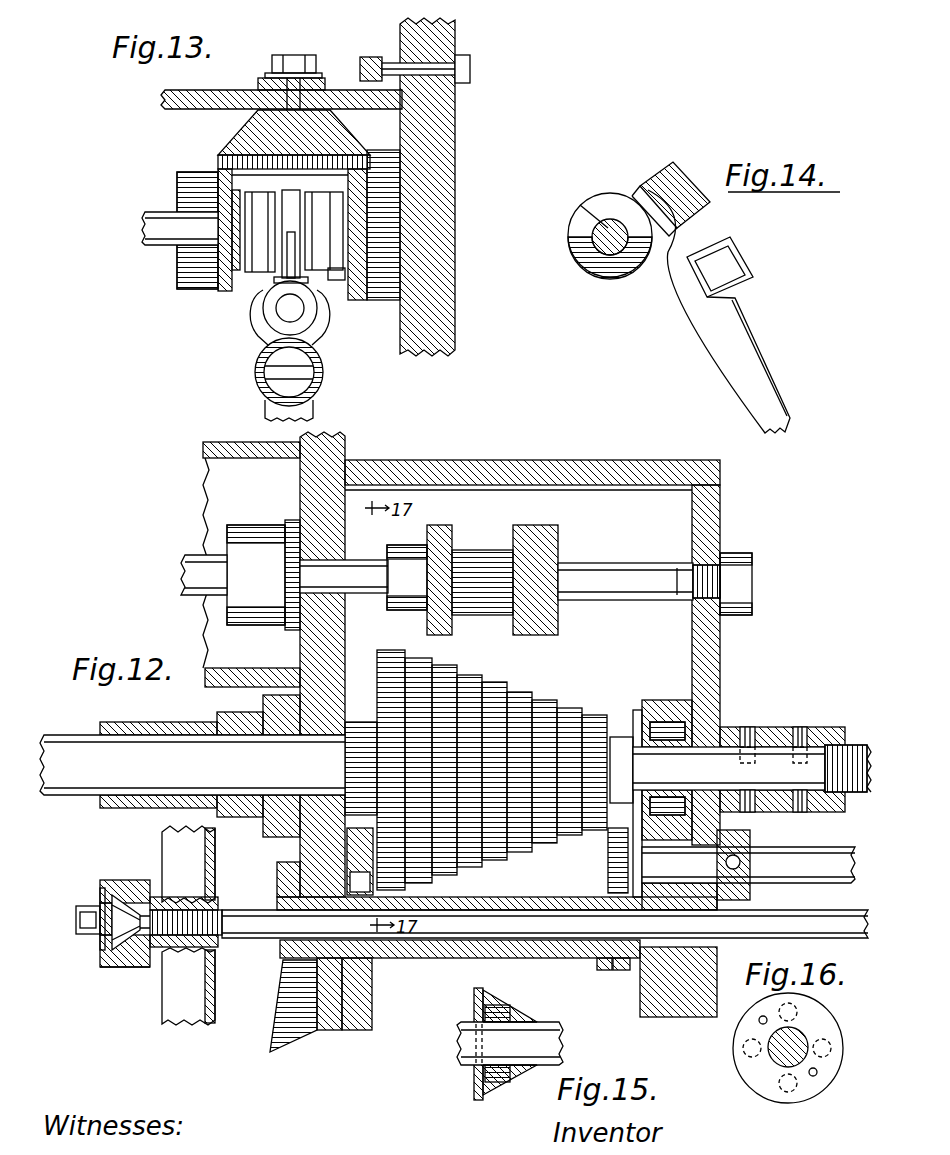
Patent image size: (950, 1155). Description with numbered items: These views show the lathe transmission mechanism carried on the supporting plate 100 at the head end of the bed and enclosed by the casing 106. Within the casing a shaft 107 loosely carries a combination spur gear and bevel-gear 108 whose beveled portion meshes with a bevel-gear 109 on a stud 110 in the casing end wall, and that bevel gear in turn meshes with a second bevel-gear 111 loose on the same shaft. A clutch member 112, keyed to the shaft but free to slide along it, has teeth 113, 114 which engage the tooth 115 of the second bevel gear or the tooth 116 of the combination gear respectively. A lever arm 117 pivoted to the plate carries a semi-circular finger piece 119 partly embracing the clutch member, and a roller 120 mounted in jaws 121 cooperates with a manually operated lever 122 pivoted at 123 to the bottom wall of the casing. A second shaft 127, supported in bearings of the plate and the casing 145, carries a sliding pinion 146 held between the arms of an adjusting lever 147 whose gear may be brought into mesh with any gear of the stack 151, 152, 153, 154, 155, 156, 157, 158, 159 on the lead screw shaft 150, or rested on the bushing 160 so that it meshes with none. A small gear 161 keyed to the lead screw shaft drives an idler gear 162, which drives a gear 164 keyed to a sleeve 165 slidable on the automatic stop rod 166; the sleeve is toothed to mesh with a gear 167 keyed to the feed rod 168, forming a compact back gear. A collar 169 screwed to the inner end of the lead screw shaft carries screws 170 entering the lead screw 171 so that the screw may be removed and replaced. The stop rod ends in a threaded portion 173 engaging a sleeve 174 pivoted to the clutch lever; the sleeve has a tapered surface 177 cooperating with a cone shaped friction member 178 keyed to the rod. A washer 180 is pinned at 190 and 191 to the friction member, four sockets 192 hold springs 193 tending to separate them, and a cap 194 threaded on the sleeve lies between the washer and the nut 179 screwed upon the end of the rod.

In FIG. 13, the supporting plate 100 is at (440, 150).
In FIG. 13, the casing 106 is at (225, 100).
In FIG. 12, the casing 106 is at (230, 446).
In FIG. 13, the shaft 107 is at (160, 247).
In FIG. 14, the shaft 107 is at (608, 257).
In FIG. 13, the combination spur gear and bevel-gear 108 is at (383, 302).
In FIG. 13, the bevel-gear 109 is at (340, 138).
In FIG. 13, the stud 110 is at (303, 76).
In FIG. 13, the second bevel-gear 111 is at (197, 290).
In FIG. 13, the clutch member 112 is at (291, 200).
In FIG. 14, the clutch member 112 is at (628, 277).
In FIG. 13, the tooth 113 is at (258, 203).
In FIG. 14, the tooth 113 is at (580, 253).
In FIG. 13, the tooth 114 is at (330, 200).
In FIG. 13, the tooth 115 is at (243, 273).
In FIG. 13, the tooth 116 is at (340, 277).
In FIG. 13, the lever arm 117 is at (285, 315).
In FIG. 14, the lever arm 117 is at (733, 365).
In FIG. 12, the lever arm 117 is at (197, 853).
In FIG. 13, the semi-circular finger piece 119 is at (213, 215).
In FIG. 14, the semi-circular finger piece 119 is at (620, 200).
In FIG. 14, the roller 120 is at (728, 255).
In FIG. 14, the jaws 121 is at (680, 250).
In FIG. 13, the manually operated lever 122 is at (307, 408).
In FIG. 13, the pivot 123 is at (297, 382).
In FIG. 12, the second shaft 127 is at (639, 568).
In FIG. 12, the casing 145 is at (712, 546).
In FIG. 12, the pinion 146 is at (488, 545).
In FIG. 12, the adjusting lever 147 is at (548, 537).
In FIG. 12, the lead screw shaft 150 is at (192, 765).
In FIG. 12, the gear 151 is at (386, 657).
In FIG. 12, the gear 152 is at (413, 665).
In FIG. 12, the gear 153 is at (447, 675).
In FIG. 12, the gear 154 is at (470, 678).
In FIG. 12, the gear 155 is at (494, 692).
In FIG. 12, the gear 156 is at (528, 690).
In FIG. 12, the gear 157 is at (543, 698).
In FIG. 12, the gear 158 is at (568, 708).
In FIG. 12, the gear 159 is at (607, 711).
In FIG. 12, the bushing 160 is at (623, 767).
In FIG. 12, the small gear 161 is at (362, 718).
In FIG. 12, the idler gear 162 is at (305, 842).
In FIG. 12, the gear 164 is at (365, 993).
In FIG. 12, the sleeve 165 is at (458, 957).
In FIG. 12, the automatic stop rod 166 is at (603, 983).
In FIG. 15, the automatic stop rod 166 is at (553, 1057).
In FIG. 16, the automatic stop rod 166 is at (798, 1035).
In FIG. 12, the gear 167 is at (612, 870).
In FIG. 12, the feed rod 168 is at (803, 877).
In FIG. 12, the collar 169 is at (762, 735).
In FIG. 12, the screws 170 is at (800, 733).
In FIG. 12, the lead screw 171 is at (829, 768).
In FIG. 12, the threaded portion 173 is at (212, 910).
In FIG. 12, the sleeve 174 is at (142, 868).
In FIG. 12, the tapered surface 177 is at (102, 902).
In FIG. 12, the cone shaped friction member 178 is at (110, 938).
In FIG. 15, the cone shaped friction member 178 is at (535, 1020).
In FIG. 12, the nut 179 is at (80, 933).
In FIG. 15, the washer 180 is at (475, 1008).
In FIG. 16, the washer 180 is at (755, 1082).
In FIG. 16, the pin 190 is at (760, 1022).
In FIG. 16, the pin 191 is at (812, 1077).
In FIG. 15, the sockets 192 is at (510, 1010).
In FIG. 16, the sockets 192 is at (745, 1050).
In FIG. 15, the springs 193 is at (500, 1088).
In FIG. 12, the cap 194 is at (122, 967).